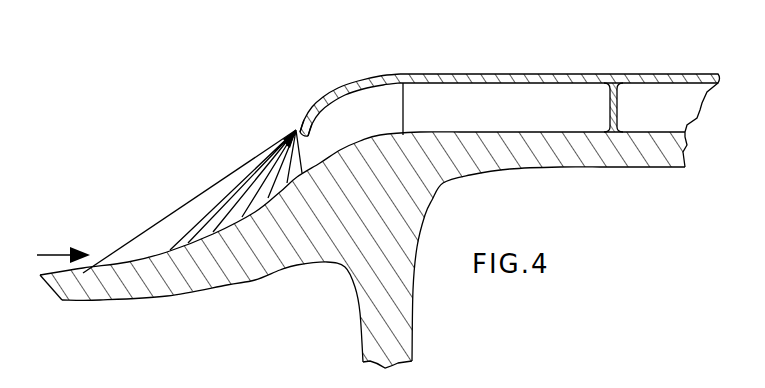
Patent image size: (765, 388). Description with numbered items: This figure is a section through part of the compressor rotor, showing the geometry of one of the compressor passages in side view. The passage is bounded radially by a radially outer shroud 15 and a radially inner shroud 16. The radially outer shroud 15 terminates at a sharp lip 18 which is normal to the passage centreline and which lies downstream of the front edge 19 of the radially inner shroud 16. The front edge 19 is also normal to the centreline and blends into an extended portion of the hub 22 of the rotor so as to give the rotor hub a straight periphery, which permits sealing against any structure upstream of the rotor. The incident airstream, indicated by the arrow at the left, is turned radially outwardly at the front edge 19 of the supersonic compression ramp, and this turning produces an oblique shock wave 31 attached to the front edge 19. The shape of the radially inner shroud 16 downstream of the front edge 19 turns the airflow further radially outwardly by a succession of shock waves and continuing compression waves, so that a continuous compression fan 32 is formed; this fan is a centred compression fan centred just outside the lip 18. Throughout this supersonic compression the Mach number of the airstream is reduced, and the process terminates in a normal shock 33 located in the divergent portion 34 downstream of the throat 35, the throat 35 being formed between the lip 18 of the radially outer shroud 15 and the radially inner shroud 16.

The radially outer shroud 15 is at (314, 96).
The radially inner shroud 16 is at (128, 258).
The sharp lip 18 is at (297, 127).
The front edge 19 is at (43, 275).
The hub 22 is at (255, 283).
The oblique shock wave 31 is at (187, 203).
The continuous compression fan 32 is at (255, 172).
The normal shock 33 is at (408, 108).
The divergent portion 34 is at (353, 122).
The throat 35 is at (311, 150).